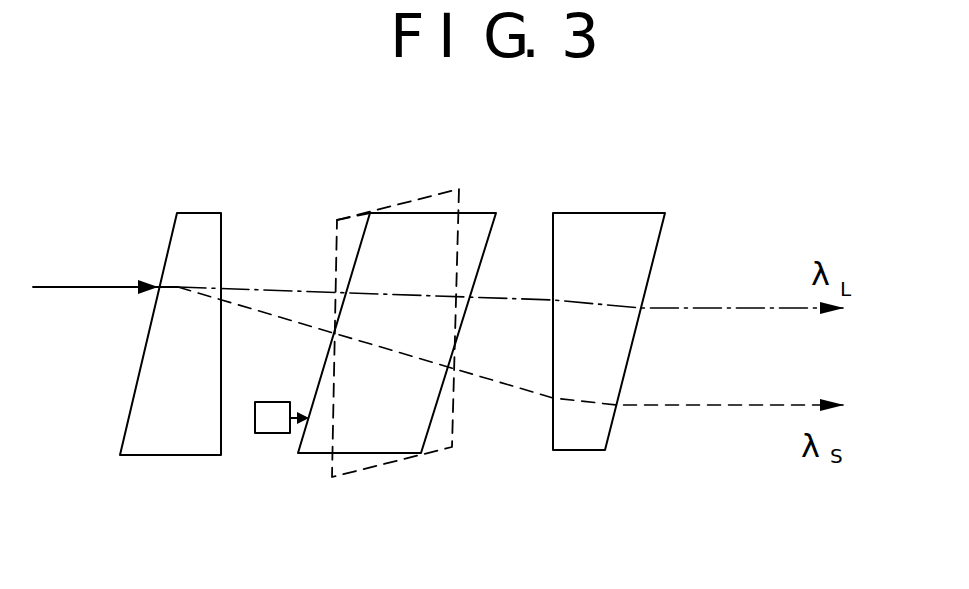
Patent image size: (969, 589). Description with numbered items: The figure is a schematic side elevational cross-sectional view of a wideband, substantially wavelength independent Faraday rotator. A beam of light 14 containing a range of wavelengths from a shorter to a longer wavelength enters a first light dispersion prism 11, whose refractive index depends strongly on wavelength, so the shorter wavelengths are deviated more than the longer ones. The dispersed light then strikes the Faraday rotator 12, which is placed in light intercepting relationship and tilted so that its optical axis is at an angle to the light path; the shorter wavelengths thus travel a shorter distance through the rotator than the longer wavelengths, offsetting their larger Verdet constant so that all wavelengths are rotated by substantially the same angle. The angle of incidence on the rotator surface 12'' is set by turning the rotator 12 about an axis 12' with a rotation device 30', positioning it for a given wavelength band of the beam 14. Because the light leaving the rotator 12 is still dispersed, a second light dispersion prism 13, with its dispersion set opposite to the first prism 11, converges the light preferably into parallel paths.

The first light dispersion prism 11 is at (152, 388).
The Faraday rotator 12 is at (397, 365).
The axis 12' is at (395, 333).
The surface 12'' is at (344, 187).
The second light dispersion prism 13 is at (602, 435).
The beam of light 14 is at (100, 287).
The rotation device 30' is at (270, 470).